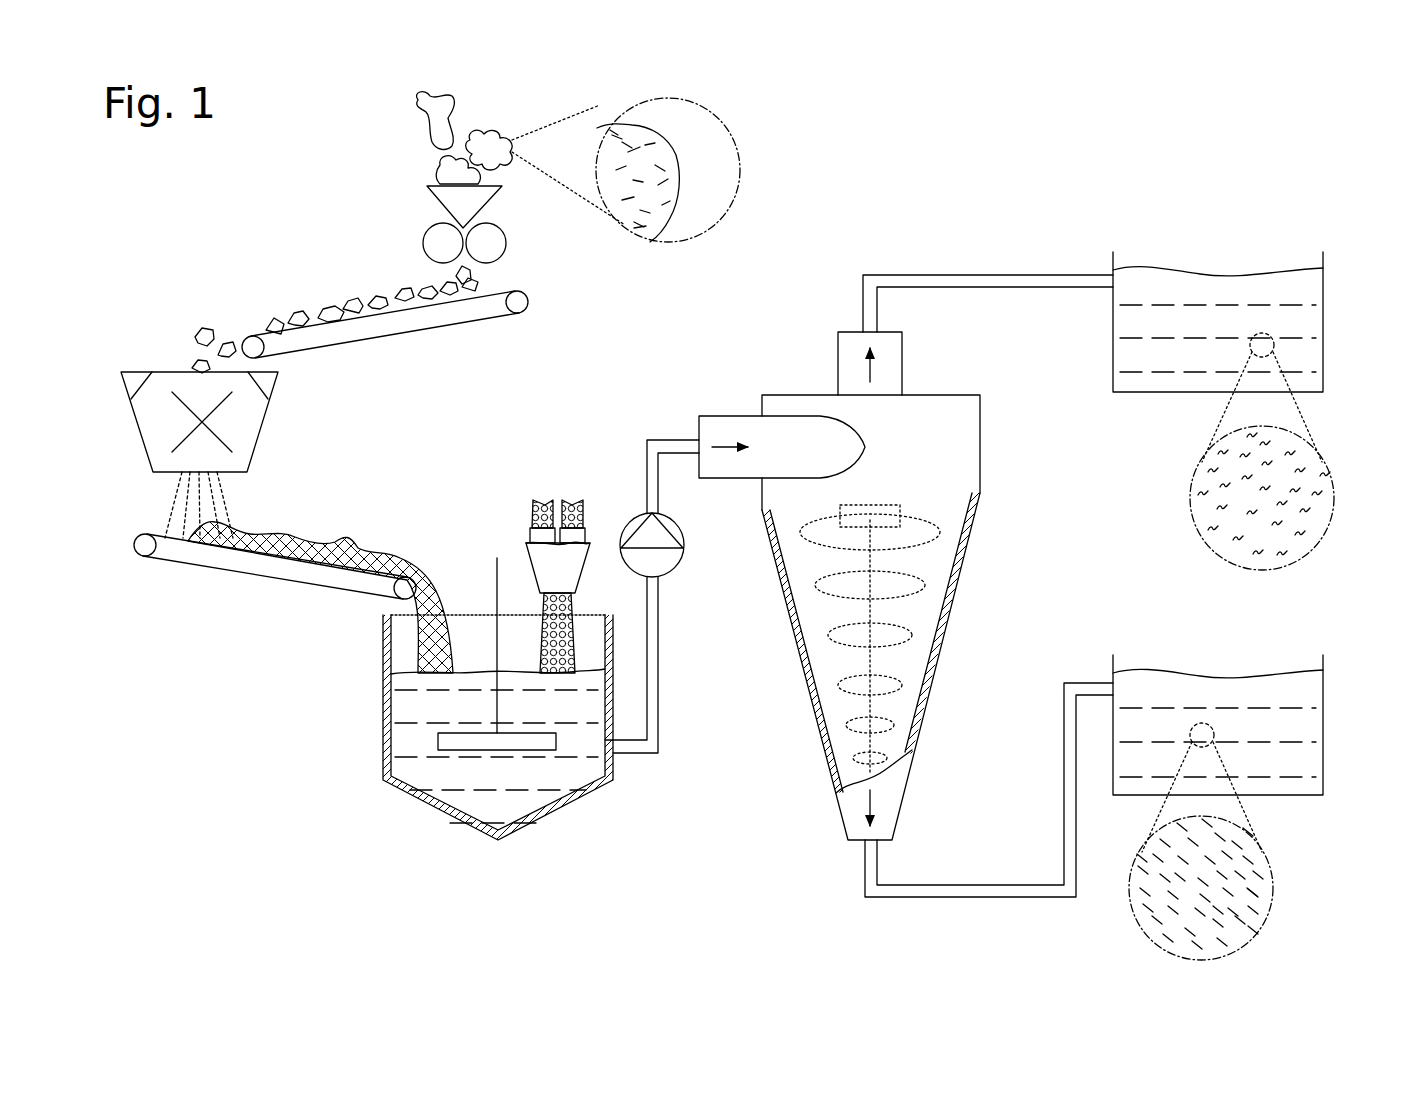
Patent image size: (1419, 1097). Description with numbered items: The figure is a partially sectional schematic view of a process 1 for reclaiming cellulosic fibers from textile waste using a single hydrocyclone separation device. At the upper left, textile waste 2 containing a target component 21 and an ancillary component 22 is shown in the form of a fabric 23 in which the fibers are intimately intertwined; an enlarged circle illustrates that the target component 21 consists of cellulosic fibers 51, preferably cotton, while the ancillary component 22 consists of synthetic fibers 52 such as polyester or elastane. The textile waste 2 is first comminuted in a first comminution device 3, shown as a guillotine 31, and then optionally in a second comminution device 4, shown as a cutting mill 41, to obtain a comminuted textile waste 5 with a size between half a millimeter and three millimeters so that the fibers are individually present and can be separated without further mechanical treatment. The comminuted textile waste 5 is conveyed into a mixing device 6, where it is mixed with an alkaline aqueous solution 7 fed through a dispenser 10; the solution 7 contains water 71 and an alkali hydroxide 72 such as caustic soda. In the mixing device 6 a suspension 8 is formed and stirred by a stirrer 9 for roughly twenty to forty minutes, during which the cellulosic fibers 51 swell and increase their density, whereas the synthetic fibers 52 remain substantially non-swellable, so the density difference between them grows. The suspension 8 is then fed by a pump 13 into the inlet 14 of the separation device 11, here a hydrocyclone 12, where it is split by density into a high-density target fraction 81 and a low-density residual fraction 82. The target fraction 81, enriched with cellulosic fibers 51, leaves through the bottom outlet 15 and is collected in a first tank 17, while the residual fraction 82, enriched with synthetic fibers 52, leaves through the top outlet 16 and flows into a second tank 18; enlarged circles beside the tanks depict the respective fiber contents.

The process 1 is at (1283, 113).
The textile waste 2 is at (466, 168).
The first comminution device 3 is at (424, 217).
The guillotine 31 is at (438, 205).
The second comminution device 4 is at (249, 453).
The cutting mill 41 is at (245, 430).
The comminuted textile waste 5 is at (350, 545).
The mixing device 6 is at (378, 774).
The alkaline aqueous solution 7 is at (568, 645).
The water 71 is at (574, 515).
The alkali hydroxide 72 is at (536, 515).
The suspension 8 is at (658, 672).
The high-density target fraction 81 is at (1185, 708).
The low-density residual fraction 82 is at (1185, 302).
The stirrer 9 is at (494, 584).
The dispenser 10 is at (541, 512).
The separation device 11 is at (897, 582).
The hydrocyclone 12 is at (960, 455).
The pump 13 is at (665, 556).
The inlet 14 is at (722, 432).
The bottom outlet 15 is at (892, 800).
The top outlet 16 is at (888, 362).
The first tank 17 is at (1325, 700).
The second tank 18 is at (1325, 290).
The target component 21 is at (642, 230).
The ancillary component 22 is at (627, 140).
The fabric 23 is at (660, 215).
The cellulosic fiber 51 is at (641, 192).
The synthetic fiber 52 is at (612, 168).